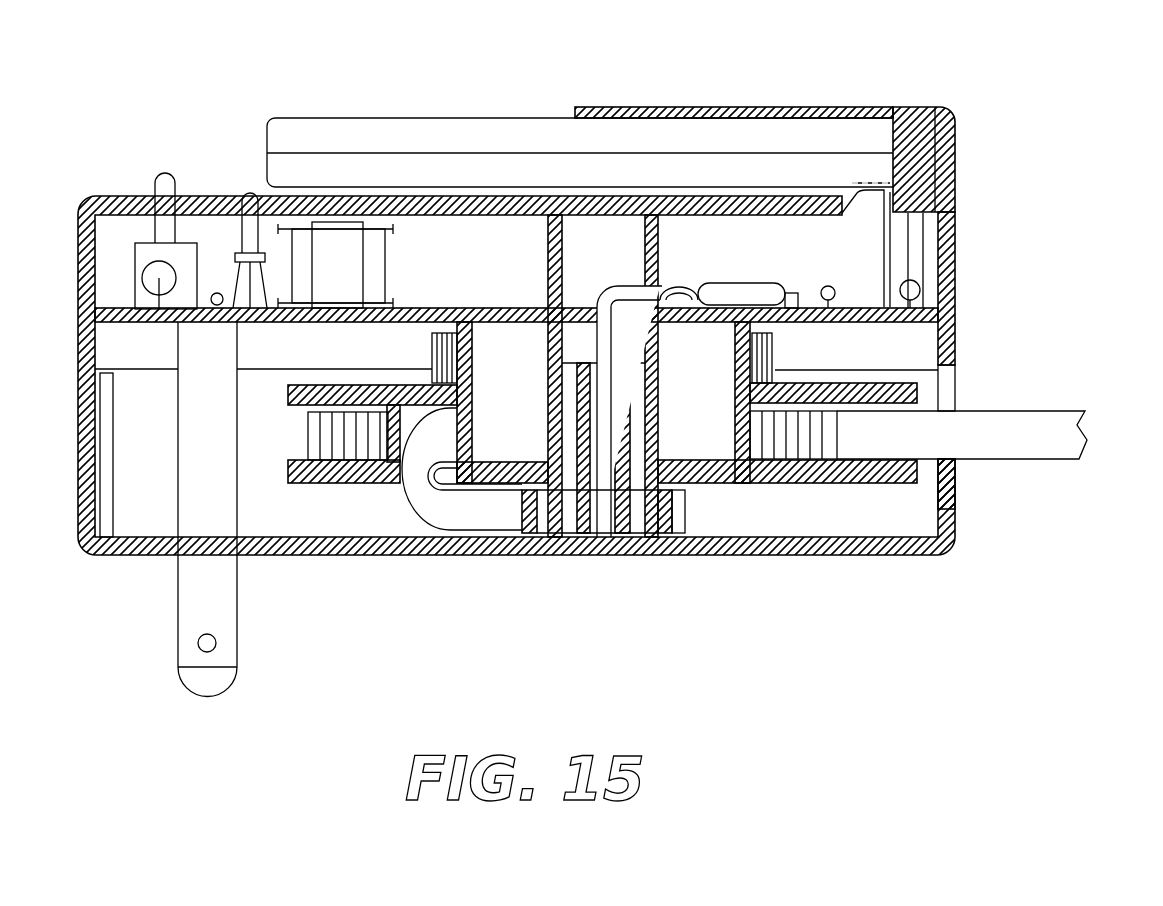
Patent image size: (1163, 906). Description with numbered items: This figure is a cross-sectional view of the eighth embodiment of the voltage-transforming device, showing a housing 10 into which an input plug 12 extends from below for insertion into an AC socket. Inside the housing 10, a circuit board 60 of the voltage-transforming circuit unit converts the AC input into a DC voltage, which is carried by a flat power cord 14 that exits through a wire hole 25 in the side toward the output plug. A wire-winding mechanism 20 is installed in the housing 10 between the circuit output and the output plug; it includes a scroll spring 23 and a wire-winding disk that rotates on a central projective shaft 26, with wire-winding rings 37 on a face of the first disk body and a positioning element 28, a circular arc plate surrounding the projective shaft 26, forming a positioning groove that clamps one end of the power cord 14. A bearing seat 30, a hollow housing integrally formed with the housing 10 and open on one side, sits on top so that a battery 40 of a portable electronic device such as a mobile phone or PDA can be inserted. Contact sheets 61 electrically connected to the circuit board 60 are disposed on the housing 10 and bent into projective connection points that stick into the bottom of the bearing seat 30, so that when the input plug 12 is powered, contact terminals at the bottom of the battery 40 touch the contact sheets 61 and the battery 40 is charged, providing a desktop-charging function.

The housing 10 is at (850, 558).
The input plug 12 is at (227, 605).
The power cord 14 is at (1070, 430).
The wire-winding mechanism 20 is at (318, 353).
The scroll spring 23 is at (767, 355).
The wire hole 25 is at (953, 463).
The projective shaft 26 is at (628, 535).
The positioning element 28 is at (532, 535).
The bearing seat 30 is at (733, 90).
The wire-winding ring 37 is at (740, 465).
The battery 40 is at (365, 143).
The circuit board 60 is at (233, 320).
The contact sheet 61 is at (953, 175).